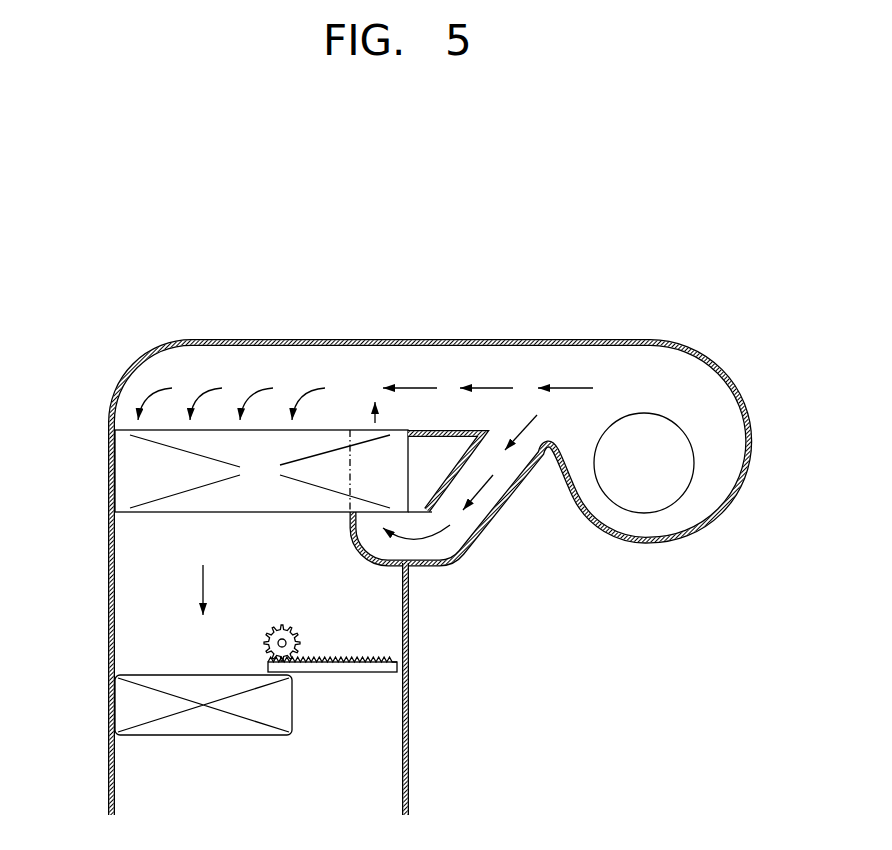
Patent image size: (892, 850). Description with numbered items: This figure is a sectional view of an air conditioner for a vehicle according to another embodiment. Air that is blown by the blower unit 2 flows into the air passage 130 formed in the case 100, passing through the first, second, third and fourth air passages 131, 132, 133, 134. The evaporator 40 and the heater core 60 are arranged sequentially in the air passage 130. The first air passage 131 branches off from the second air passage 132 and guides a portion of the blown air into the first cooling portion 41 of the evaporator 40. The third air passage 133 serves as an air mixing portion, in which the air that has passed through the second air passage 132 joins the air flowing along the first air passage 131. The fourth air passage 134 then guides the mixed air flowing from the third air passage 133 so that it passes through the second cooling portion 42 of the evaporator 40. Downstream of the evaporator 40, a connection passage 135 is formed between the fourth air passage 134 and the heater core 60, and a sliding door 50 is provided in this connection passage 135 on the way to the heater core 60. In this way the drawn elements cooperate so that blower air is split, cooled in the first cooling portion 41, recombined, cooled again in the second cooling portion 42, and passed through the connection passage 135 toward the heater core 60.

The case 100 is at (117, 273).
The blower unit 2 is at (693, 427).
The evaporator 40 is at (265, 513).
The first cooling portion 41 is at (395, 483).
The second cooling portion 42 is at (275, 483).
The sliding door 50 is at (397, 667).
The heater core 60 is at (128, 705).
The air passage 130 is at (270, 604).
The first air passage 131 is at (466, 520).
The second air passage 132 is at (453, 380).
The third air passage 133 is at (207, 545).
The fourth air passage 134 is at (307, 380).
The connection passage 135 is at (165, 605).